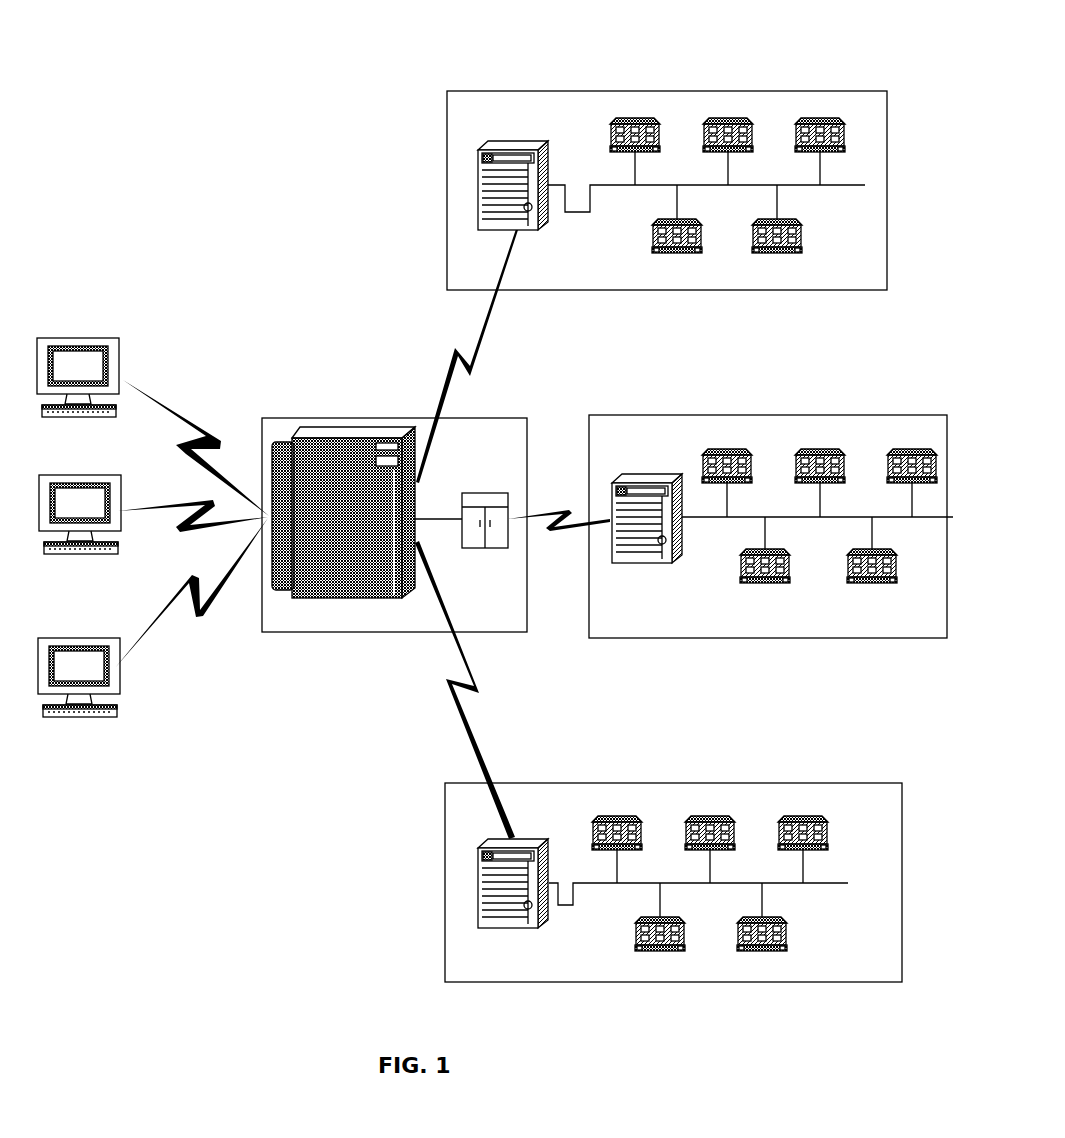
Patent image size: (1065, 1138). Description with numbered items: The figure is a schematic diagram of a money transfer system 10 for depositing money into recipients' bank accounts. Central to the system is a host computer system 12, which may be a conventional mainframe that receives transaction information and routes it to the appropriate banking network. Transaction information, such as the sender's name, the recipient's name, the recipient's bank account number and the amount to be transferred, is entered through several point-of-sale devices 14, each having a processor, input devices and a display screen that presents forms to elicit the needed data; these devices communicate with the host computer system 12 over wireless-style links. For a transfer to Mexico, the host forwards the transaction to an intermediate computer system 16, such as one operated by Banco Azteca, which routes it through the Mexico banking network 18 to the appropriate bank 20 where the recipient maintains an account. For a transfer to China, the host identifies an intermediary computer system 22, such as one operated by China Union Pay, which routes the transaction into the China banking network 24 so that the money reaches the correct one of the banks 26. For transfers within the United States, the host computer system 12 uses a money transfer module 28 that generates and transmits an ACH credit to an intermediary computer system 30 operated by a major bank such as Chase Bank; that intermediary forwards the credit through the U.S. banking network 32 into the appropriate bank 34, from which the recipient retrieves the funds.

The money transfer system 10 is at (606, 44).
The host computer system 12 is at (342, 418).
The point-of-sale devices 14 is at (121, 346).
The intermediate computer system 16 is at (478, 183).
The Mexico banking network 18 is at (793, 91).
The bank 20 is at (632, 119).
The intermediary computer system 22 is at (477, 880).
The China banking network 24 is at (793, 783).
The banks 26 is at (615, 817).
The money transfer module 28 is at (483, 493).
The intermediary computer system 30 is at (635, 475).
The U.S. banking network 32 is at (793, 415).
The bank 34 is at (725, 450).